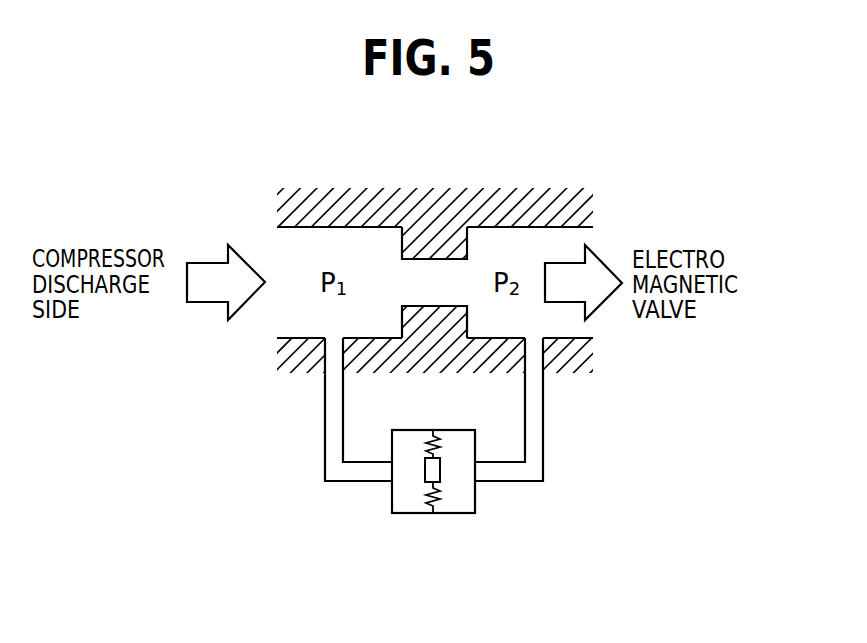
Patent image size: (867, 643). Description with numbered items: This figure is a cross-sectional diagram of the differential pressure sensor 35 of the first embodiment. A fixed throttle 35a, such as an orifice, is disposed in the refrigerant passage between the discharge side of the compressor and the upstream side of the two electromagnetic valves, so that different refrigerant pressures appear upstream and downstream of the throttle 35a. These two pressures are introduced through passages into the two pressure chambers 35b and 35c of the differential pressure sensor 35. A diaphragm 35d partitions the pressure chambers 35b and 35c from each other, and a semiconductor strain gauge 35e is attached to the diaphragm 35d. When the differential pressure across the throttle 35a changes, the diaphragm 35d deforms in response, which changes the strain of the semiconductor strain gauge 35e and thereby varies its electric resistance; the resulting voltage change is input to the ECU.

The differential pressure sensor 35 is at (439, 380).
The fixed throttle 35a is at (432, 285).
The pressure chamber 35b is at (403, 497).
The pressure chamber 35c is at (465, 493).
The diaphragm 35d is at (427, 503).
The semiconductor strain gauge 35e is at (440, 468).